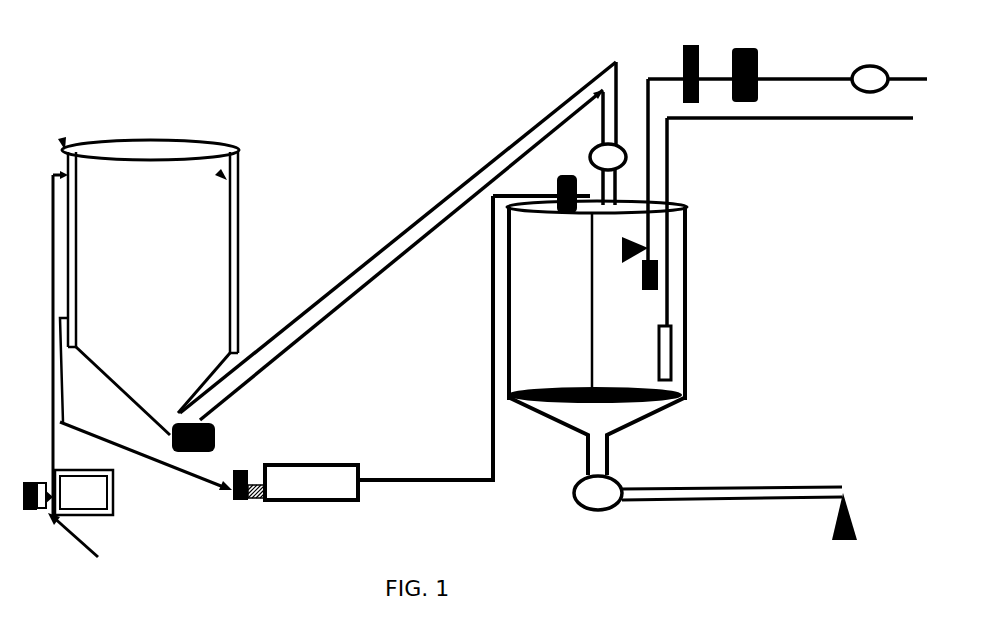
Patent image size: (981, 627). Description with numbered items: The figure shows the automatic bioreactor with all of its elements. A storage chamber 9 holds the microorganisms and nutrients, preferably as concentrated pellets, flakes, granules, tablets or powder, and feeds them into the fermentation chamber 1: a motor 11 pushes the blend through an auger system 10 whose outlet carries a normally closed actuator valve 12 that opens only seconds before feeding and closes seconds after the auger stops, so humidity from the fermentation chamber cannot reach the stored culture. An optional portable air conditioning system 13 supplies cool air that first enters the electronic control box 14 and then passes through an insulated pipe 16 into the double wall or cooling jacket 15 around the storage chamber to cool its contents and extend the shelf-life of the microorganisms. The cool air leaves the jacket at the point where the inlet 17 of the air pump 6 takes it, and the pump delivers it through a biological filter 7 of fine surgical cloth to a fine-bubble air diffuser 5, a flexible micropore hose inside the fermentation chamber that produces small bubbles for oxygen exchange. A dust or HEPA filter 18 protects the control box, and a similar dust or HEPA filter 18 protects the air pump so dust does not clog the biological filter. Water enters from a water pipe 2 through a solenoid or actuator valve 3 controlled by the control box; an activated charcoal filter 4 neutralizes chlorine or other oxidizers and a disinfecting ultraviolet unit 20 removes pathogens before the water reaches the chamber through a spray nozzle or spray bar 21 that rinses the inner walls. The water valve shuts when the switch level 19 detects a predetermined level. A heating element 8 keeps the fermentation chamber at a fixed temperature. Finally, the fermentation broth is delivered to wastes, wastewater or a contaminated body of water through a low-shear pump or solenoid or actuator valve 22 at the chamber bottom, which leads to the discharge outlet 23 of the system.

The fermentation chamber 1 is at (597, 338).
The water pipe 2 is at (842, 69).
The solenoid or actuator valve 3 is at (870, 70).
The activated charcoal filter 4 is at (673, 58).
The fine-bubble air diffuser 5 is at (595, 384).
The air pump 6 is at (427, 348).
The biological filter 7 is at (560, 191).
The heating element 8 is at (778, 249).
The storage chamber 9 is at (150, 287).
The auger system 10 is at (398, 241).
The motor 11 is at (208, 438).
The actuator valve 12 is at (599, 174).
The portable air conditioning system 13 is at (77, 549).
The electronic control box 14 is at (84, 492).
The cooling jacket 15 is at (227, 180).
The insulated pipe 16 is at (42, 343).
The inlet of the air pump 17 is at (146, 464).
The dust or HEPA filter 18 is at (144, 494).
The switch level 19 is at (651, 194).
The disinfecting ultraviolet unit 20 is at (728, 58).
The spray nozzle or spray bar 21 is at (625, 250).
The solenoid or actuator valve 22 is at (598, 508).
The outlet 23 is at (739, 526).